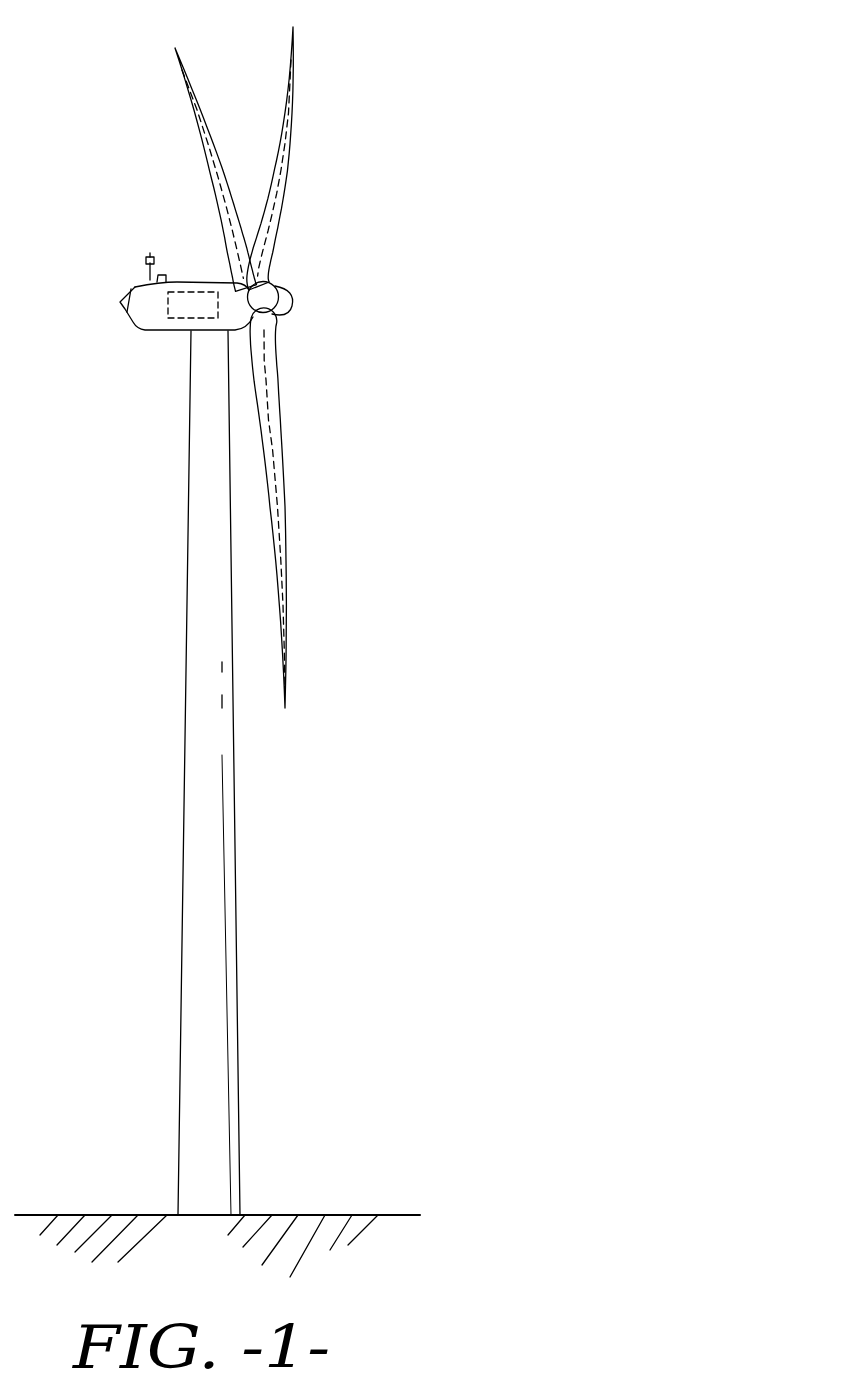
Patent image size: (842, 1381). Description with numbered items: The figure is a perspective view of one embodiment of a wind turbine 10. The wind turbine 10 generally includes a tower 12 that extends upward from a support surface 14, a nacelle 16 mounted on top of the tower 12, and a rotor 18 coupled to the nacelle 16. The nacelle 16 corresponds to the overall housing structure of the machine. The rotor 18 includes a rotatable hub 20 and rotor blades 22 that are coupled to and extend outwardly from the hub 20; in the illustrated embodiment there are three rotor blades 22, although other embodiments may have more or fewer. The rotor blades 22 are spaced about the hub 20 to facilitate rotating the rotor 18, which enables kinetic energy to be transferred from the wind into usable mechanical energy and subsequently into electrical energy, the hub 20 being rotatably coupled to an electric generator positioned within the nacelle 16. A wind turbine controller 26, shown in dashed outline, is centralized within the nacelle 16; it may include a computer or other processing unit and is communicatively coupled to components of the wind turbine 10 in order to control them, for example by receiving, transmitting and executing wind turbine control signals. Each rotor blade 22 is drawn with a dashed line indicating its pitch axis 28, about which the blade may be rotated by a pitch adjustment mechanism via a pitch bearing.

The wind turbine 10 is at (261, 640).
The tower 12 is at (195, 893).
The support surface 14 is at (100, 1214).
The nacelle 16 is at (169, 299).
The rotor 18 is at (270, 356).
The rotatable hub 20 is at (283, 308).
The rotor blade 22 is at (289, 70).
The wind turbine controller 26 is at (198, 292).
The pitch axis 28 is at (219, 203).